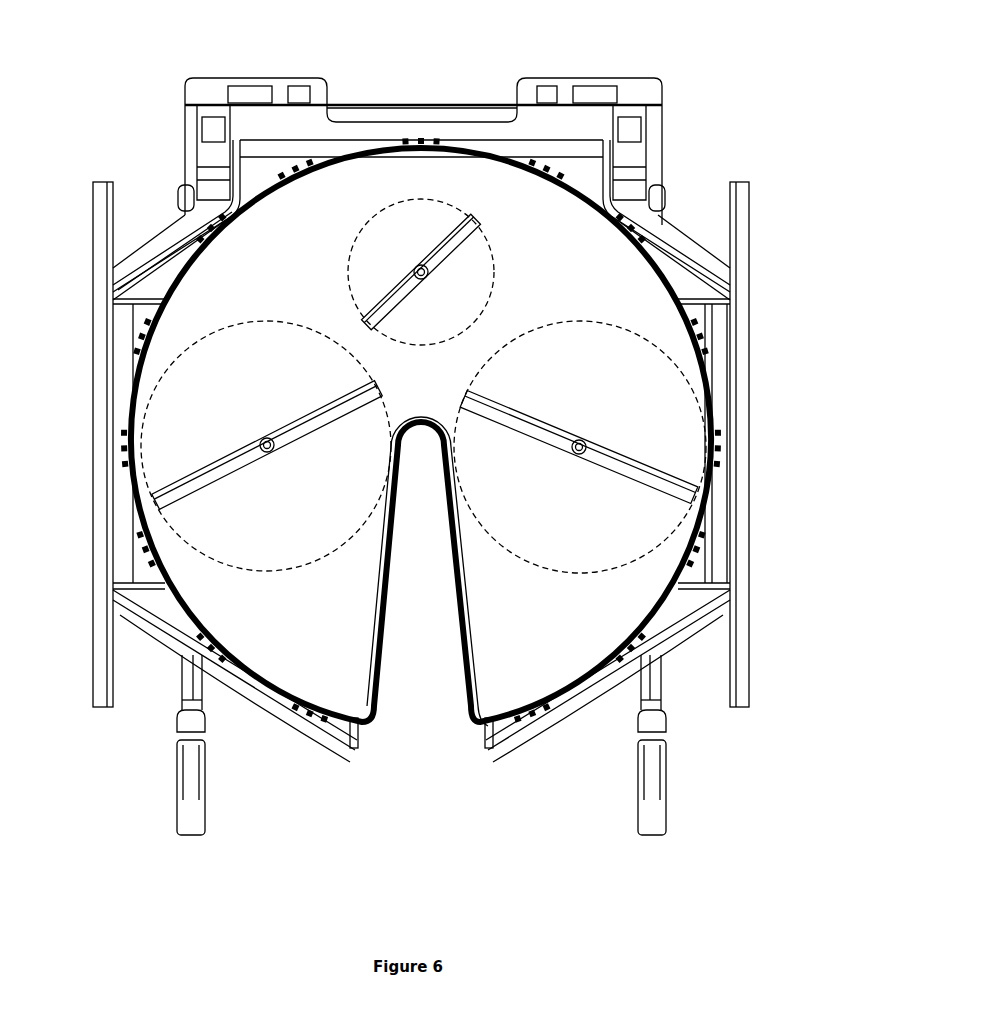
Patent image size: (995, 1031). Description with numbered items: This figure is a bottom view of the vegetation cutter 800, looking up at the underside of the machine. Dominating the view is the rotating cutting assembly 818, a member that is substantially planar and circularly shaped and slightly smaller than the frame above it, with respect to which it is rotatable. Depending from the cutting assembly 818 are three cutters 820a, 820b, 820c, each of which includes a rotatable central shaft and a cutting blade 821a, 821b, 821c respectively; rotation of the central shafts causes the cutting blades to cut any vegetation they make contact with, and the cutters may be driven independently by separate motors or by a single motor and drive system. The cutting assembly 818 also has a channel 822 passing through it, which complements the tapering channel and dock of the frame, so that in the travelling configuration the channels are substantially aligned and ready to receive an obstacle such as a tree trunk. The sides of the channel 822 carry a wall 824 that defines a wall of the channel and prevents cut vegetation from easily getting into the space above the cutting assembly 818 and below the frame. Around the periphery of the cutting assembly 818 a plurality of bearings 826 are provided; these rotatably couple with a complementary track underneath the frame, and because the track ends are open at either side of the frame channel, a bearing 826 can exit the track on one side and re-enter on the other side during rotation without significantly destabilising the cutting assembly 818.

The vegetation cutter 800 is at (704, 93).
The rotating cutting assembly 818 is at (249, 629).
The cutter 820a is at (678, 416).
The cutter 820b is at (174, 434).
The cutter 820c is at (379, 234).
The cutting blade 821a is at (650, 486).
The cutting blade 821b is at (238, 477).
The cutting blade 821c is at (466, 250).
The channel 822 is at (426, 714).
The wall 824 is at (441, 570).
The bearings 826 is at (180, 243).